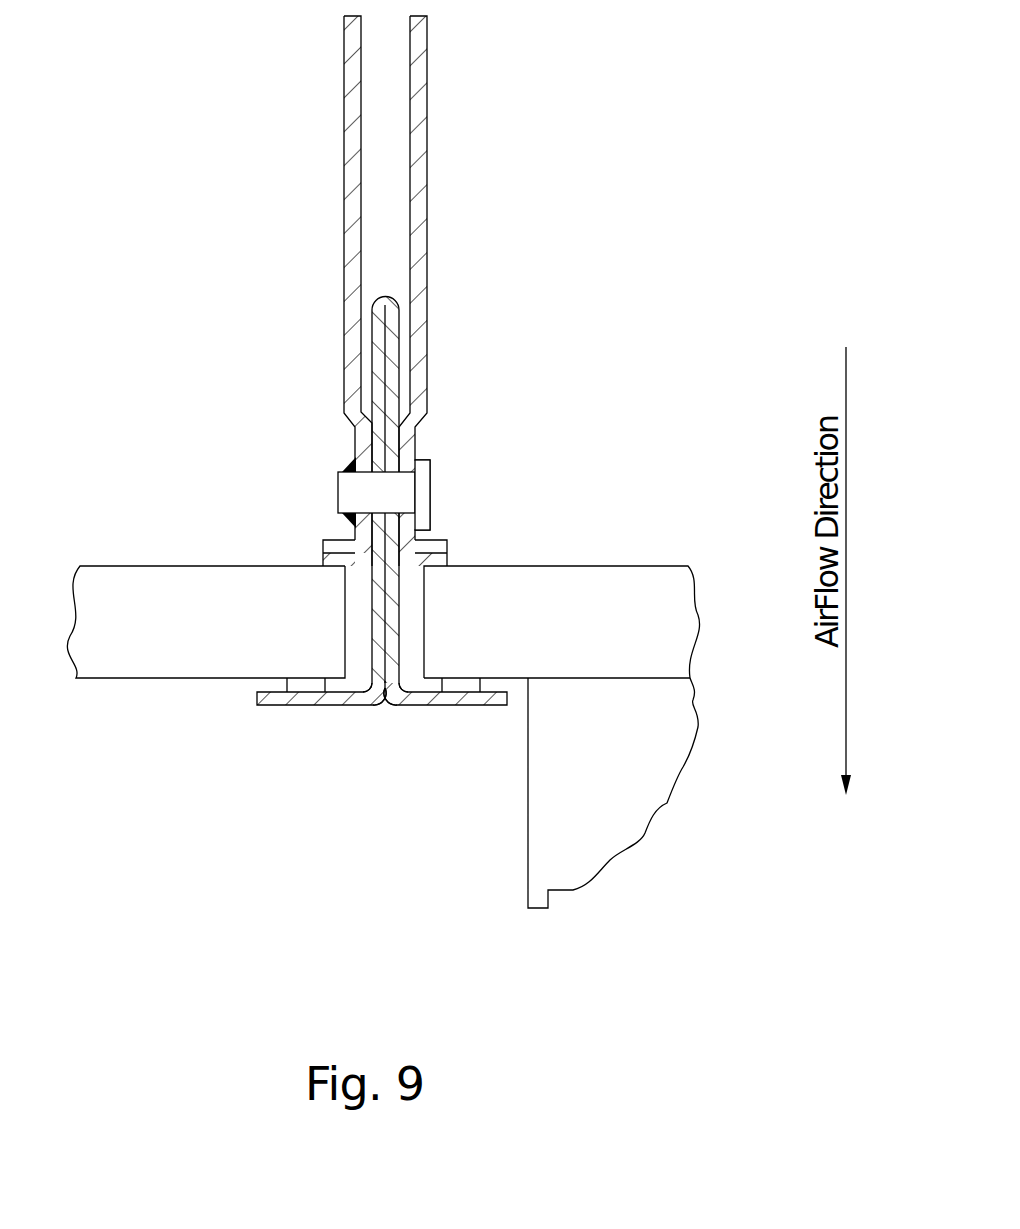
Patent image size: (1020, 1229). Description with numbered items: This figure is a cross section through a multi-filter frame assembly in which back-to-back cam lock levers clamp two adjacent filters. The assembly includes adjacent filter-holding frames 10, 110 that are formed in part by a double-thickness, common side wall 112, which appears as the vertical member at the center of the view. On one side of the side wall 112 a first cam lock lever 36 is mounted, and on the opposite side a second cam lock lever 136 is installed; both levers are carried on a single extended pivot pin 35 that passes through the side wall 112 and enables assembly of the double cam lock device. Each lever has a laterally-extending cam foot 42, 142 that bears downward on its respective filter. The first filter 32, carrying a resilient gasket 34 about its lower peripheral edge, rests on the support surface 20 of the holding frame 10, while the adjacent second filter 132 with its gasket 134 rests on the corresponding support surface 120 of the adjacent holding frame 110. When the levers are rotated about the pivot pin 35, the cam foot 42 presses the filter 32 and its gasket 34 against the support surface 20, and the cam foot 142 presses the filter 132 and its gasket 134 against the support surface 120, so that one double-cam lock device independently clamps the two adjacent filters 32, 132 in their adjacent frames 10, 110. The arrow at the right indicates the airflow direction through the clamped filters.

The filter holding frame 10 is at (400, 745).
The lower horizontal support flange 20 is at (443, 707).
The filter 32 is at (660, 538).
The resilient gasket 34 is at (470, 707).
The pivot pin 35 is at (405, 492).
The cam lock lever 36 is at (447, 152).
The cam foot 42 is at (445, 543).
The filter-holding frame 110 is at (349, 733).
The common side wall 112 is at (417, 333).
The support surface 120 is at (277, 707).
The filter 132 is at (145, 556).
The gasket 134 is at (312, 707).
The cam lock lever 136 is at (325, 152).
The cam foot 142 is at (322, 543).